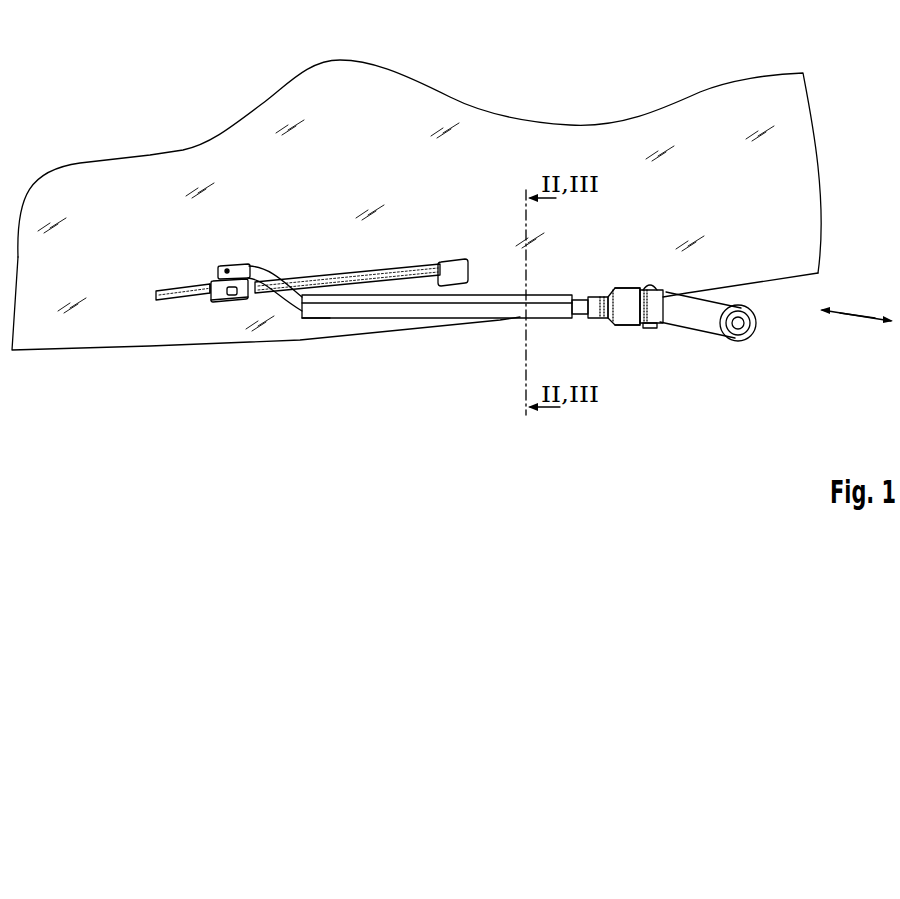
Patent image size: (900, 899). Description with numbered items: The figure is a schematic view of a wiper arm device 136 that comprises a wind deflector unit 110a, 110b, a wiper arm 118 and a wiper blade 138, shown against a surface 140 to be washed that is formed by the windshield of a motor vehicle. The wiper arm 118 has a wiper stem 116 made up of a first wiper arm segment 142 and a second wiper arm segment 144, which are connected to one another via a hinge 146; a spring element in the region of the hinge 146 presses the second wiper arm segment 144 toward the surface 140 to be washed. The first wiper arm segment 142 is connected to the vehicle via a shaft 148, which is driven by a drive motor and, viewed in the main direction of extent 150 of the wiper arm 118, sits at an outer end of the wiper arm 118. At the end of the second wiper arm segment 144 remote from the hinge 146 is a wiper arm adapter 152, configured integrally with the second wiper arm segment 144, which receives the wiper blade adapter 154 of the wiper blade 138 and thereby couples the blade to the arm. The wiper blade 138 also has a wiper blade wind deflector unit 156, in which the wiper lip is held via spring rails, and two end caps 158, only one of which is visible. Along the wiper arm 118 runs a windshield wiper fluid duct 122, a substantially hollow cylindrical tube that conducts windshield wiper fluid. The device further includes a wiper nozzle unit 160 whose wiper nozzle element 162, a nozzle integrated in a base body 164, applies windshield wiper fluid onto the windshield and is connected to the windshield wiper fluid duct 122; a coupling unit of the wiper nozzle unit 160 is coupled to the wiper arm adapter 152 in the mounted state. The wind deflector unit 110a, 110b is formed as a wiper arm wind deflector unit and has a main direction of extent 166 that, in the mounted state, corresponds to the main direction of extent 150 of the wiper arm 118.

The wind deflector unit 110a is at (437, 344).
The wind deflector unit 110b is at (410, 306).
The wiper stem 116 is at (607, 330).
The wiper arm 118 is at (610, 205).
The windshield wiper fluid duct 122 is at (270, 268).
The wiper arm device 136 is at (306, 322).
The wiper blade 138 is at (369, 262).
The surface to be washed 140 is at (752, 98).
The first wiper arm segment 142 is at (703, 322).
The second wiper arm segment 144 is at (622, 313).
The hinge 146 is at (648, 273).
The shaft 148 is at (738, 327).
The main direction of extent 150 is at (858, 313).
The wiper arm adapter 152 is at (245, 293).
The wiper blade adapter 154 is at (211, 301).
The wiper blade wind deflector unit 156 is at (177, 290).
The end cap 158 is at (452, 261).
The wiper nozzle unit 160 is at (242, 270).
The wiper nozzle element 162 is at (210, 280).
The base body 164 is at (227, 270).
The main direction of extent 166 is at (858, 313).